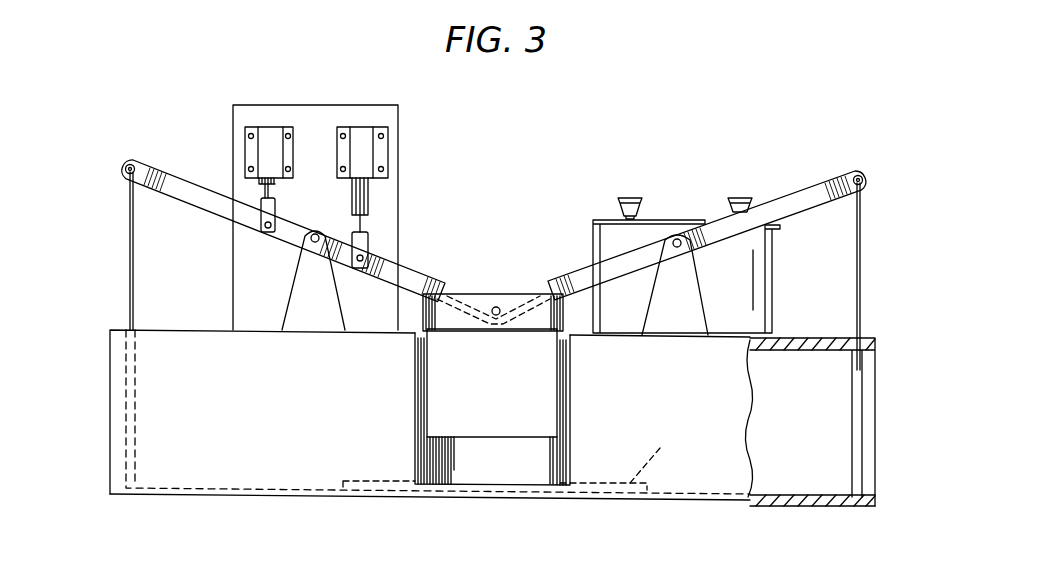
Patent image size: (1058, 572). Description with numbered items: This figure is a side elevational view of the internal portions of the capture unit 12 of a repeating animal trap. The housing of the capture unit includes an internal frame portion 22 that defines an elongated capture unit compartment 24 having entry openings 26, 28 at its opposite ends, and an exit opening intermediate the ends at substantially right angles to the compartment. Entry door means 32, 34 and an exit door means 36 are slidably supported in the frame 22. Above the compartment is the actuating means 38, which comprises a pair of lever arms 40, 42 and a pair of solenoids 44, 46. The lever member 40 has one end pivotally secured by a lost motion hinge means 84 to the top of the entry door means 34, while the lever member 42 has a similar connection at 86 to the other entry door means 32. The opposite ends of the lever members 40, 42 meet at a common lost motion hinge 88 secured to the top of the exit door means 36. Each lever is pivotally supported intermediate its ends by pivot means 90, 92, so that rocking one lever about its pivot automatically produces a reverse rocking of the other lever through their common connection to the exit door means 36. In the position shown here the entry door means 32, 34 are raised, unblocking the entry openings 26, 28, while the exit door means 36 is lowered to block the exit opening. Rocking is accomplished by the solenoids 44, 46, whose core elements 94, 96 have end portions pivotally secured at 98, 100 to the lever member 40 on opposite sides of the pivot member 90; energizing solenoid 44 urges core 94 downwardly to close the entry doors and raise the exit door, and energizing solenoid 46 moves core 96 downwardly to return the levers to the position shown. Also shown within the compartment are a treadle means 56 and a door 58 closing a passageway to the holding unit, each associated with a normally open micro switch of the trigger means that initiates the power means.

The capture unit means 12 is at (190, 527).
The internal frame portion 22 is at (805, 505).
The capture unit compartment 24 is at (797, 433).
The entry opening 26 is at (868, 410).
The entry opening 28 is at (108, 433).
The entry door means 32 is at (862, 255).
The entry door means 34 is at (125, 263).
The exit door means 36 is at (532, 449).
The actuating means 38 is at (423, 262).
The lever member 40 is at (180, 182).
The lever member 42 is at (793, 202).
The solenoid 44 is at (270, 138).
The solenoid 46 is at (360, 138).
The treadle means 56 is at (661, 455).
The door 58 is at (540, 376).
The lost motion hinge means 84 is at (128, 159).
The lost motion hinge means 86 is at (859, 176).
The common lost motion hinge 88 is at (498, 306).
The pivot means 90 is at (316, 234).
The pivot means 92 is at (679, 238).
The core element 94 is at (276, 184).
The core element 96 is at (370, 200).
The pivotal connection 98 is at (270, 232).
The pivotal connection 100 is at (360, 266).